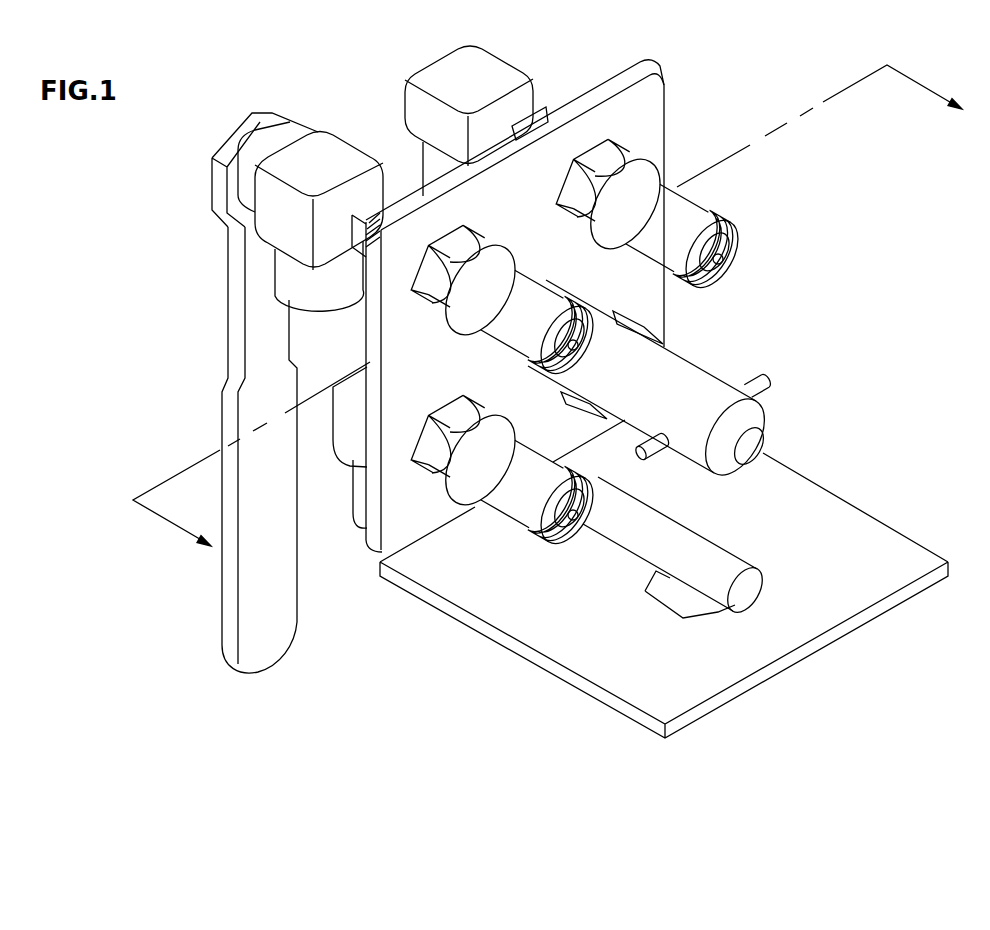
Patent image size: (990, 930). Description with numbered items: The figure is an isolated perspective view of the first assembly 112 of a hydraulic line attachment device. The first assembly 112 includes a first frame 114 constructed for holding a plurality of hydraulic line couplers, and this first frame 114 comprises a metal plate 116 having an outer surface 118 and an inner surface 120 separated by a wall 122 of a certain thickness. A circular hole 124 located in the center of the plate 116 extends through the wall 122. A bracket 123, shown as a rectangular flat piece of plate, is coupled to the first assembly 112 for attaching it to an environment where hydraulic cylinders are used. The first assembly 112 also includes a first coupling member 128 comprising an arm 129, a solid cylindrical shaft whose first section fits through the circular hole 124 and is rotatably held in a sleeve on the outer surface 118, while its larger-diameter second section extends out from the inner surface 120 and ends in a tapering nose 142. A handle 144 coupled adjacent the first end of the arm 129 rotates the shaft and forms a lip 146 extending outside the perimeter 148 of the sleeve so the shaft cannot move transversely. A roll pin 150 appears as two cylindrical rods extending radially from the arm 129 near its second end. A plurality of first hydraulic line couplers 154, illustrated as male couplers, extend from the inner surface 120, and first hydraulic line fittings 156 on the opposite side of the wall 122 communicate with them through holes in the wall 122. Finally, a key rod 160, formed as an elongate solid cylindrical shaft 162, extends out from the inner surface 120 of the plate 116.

The first assembly 112 is at (383, 655).
The first frame 114 is at (628, 80).
The plate 116 is at (667, 100).
The outer surface 118 is at (580, 100).
The inner surface 120 is at (390, 482).
The wall 122 is at (373, 434).
The bracket 123 is at (903, 548).
The circular hole 124 is at (548, 278).
The first coupling member 128 is at (690, 340).
The arm 129 is at (675, 393).
The tapering nose 142 is at (762, 418).
The handle 144 is at (253, 648).
The lip 146 is at (284, 127).
The perimeter 148 is at (247, 155).
The roll pin 150 is at (660, 446).
The first hydraulic line couplers 154 is at (740, 232).
The first hydraulic line fittings 156 is at (328, 150).
The key rod 160 is at (752, 578).
The cylindrical shaft 162 is at (697, 545).